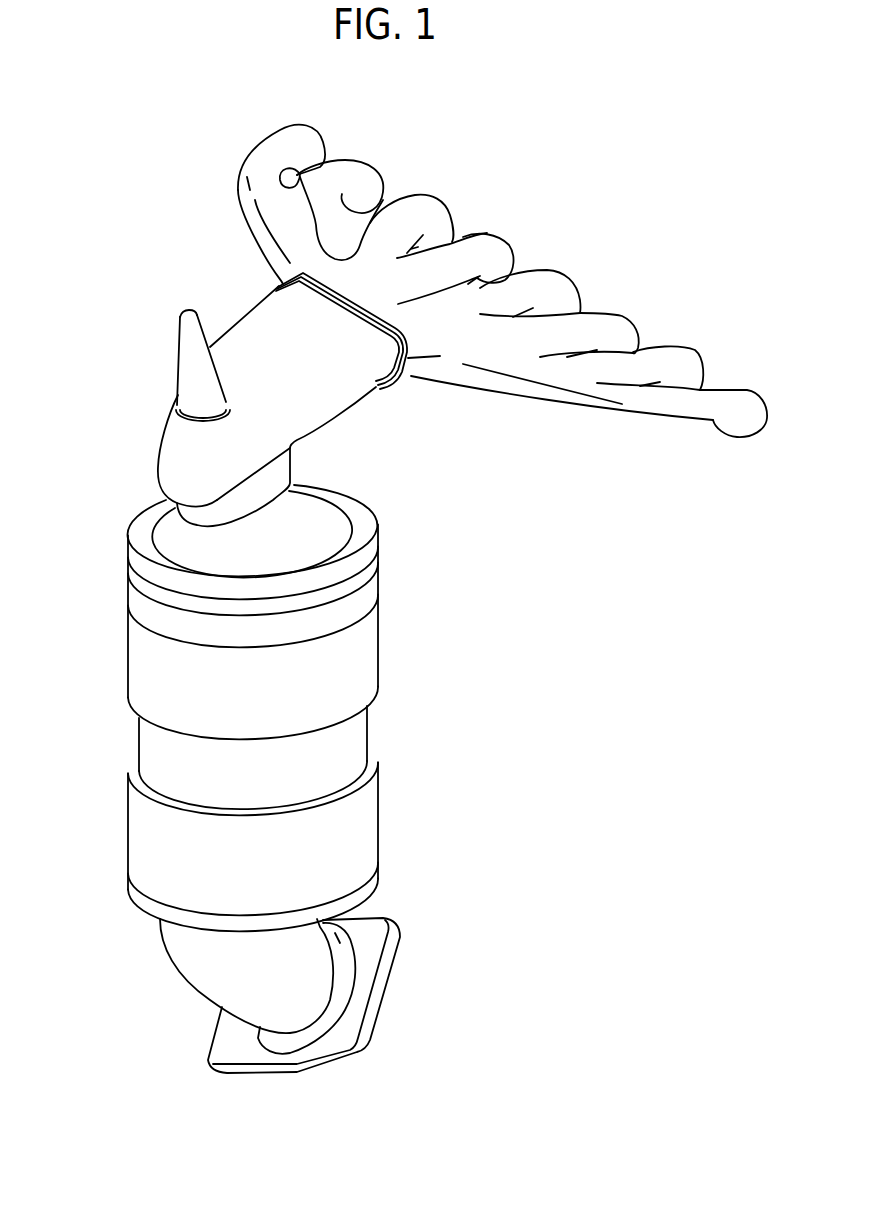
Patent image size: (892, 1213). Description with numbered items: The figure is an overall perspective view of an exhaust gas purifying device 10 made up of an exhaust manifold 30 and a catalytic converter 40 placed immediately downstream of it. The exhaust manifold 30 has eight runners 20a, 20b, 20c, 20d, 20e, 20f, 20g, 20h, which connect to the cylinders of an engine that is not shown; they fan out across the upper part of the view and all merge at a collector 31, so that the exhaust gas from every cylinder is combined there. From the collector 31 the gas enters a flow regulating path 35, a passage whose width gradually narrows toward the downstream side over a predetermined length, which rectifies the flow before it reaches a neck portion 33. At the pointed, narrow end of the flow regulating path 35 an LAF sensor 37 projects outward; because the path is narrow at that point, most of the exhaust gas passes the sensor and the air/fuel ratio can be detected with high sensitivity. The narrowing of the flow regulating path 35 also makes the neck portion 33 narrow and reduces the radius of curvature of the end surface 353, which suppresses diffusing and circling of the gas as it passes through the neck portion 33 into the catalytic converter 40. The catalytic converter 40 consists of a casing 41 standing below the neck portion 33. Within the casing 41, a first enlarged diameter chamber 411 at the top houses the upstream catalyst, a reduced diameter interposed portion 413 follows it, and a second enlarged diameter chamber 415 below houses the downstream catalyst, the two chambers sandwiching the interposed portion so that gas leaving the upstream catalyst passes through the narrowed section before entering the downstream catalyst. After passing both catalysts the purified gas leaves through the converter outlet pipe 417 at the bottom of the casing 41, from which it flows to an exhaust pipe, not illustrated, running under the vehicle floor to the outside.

The exhaust gas purifying device 10 is at (128, 102).
The runner 20a is at (312, 127).
The runner 20b is at (368, 167).
The runner 20c is at (432, 207).
The runner 20d is at (497, 244).
The runner 20e is at (557, 284).
The runner 20f is at (632, 322).
The runner 20g is at (686, 352).
The runner 20h is at (748, 398).
The exhaust manifold 30 is at (220, 308).
The collector 31 is at (327, 267).
The neck portion 33 is at (283, 466).
The flow regulating path 35 is at (268, 320).
The LAF sensor 37 is at (183, 330).
The end surface 353 is at (165, 462).
The catalytic converter 40 is at (492, 596).
The casing 41 is at (478, 709).
The first enlarged diameter chamber 411 is at (378, 621).
The reduced diameter interposed portion 413 is at (368, 720).
The second enlarged diameter chamber 415 is at (378, 813).
The converter outlet pipe 417 is at (395, 942).